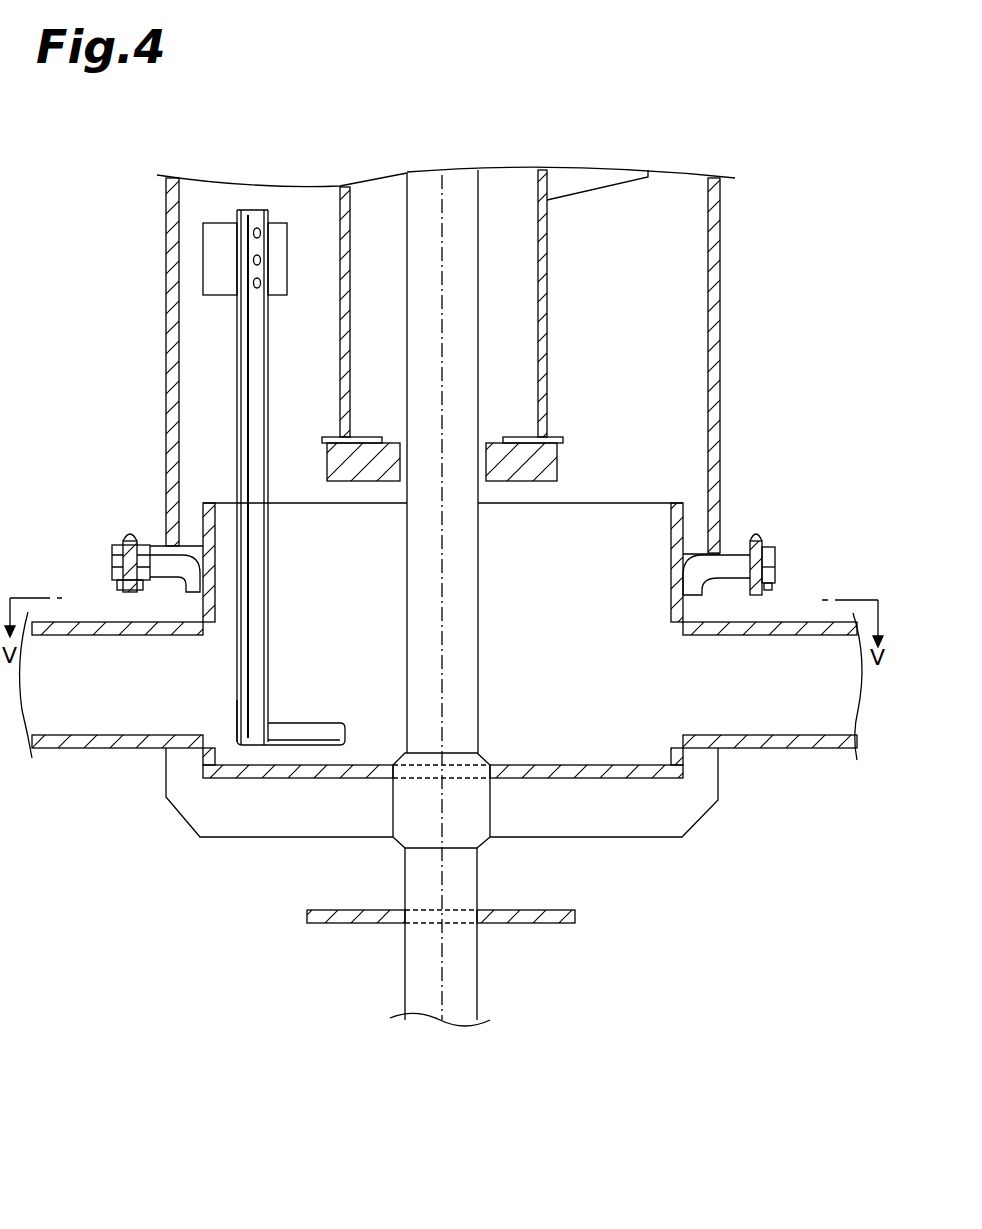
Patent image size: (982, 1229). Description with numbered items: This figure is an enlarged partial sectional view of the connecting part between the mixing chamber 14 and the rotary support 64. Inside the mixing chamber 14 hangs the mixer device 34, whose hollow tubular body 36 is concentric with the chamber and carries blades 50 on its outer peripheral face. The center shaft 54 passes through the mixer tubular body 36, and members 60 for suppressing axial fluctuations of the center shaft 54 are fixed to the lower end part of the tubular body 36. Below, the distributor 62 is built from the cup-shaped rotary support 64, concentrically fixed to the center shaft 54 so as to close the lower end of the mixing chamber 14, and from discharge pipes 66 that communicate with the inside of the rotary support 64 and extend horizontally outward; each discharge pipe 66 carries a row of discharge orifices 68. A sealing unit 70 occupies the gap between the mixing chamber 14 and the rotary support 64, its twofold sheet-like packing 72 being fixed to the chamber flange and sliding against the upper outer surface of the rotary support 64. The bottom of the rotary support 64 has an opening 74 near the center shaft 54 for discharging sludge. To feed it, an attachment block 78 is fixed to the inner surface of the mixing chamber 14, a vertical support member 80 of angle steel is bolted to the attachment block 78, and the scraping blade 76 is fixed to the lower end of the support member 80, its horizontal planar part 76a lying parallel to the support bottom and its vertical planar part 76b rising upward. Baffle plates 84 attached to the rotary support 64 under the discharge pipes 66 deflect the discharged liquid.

The mixing chamber 14 is at (720, 345).
The mixer device 34 is at (475, 306).
The hollow tubular body 36 is at (547, 317).
The blades 50 is at (627, 181).
The center shaft 54 is at (463, 568).
The members for suppressing axial fluctuations 60 is at (557, 457).
The distributor 62 is at (137, 763).
The rotary support 64 is at (670, 555).
The discharge pipes 66 is at (441, 673).
The discharge orifices 68 is at (80, 750).
The sealing unit 70 is at (732, 598).
The packing 72 is at (732, 549).
The opening 74 is at (330, 776).
The scraping blade 76 is at (310, 749).
The horizontal planar part 76a is at (278, 748).
The vertical planar part 76b is at (287, 727).
The attachment block 78 is at (220, 288).
The support member 80 is at (257, 565).
The baffle plates 84 is at (545, 923).